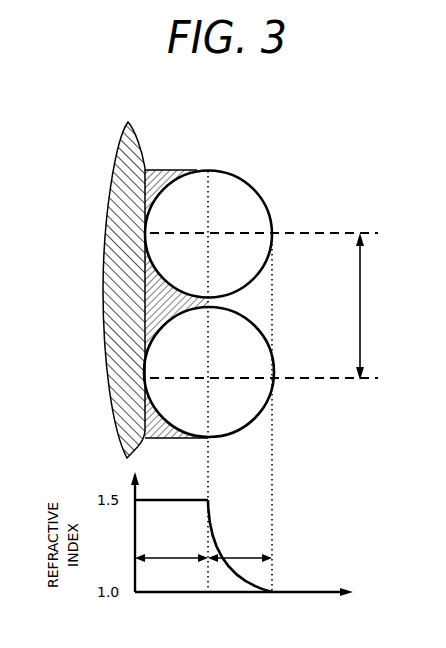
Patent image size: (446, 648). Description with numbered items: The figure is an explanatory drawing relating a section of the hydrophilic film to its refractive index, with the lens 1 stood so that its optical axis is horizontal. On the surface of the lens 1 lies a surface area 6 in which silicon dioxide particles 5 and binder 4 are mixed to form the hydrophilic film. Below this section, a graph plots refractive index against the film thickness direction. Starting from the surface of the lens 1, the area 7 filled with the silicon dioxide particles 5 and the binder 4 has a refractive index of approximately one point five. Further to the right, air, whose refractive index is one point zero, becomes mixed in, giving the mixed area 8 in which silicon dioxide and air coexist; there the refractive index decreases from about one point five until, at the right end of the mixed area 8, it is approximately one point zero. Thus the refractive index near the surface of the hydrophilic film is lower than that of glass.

The lens 1 is at (103, 321).
The binder 4 is at (177, 166).
The silicon dioxide particles 5 is at (241, 198).
The surface area 6 is at (366, 293).
The area filled with silicon dioxide particles and binder 7 is at (172, 561).
The mixed area 8 is at (243, 561).